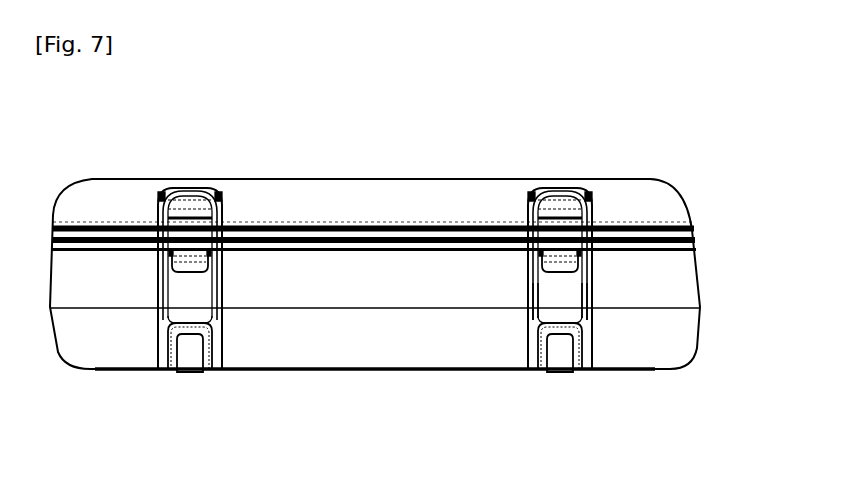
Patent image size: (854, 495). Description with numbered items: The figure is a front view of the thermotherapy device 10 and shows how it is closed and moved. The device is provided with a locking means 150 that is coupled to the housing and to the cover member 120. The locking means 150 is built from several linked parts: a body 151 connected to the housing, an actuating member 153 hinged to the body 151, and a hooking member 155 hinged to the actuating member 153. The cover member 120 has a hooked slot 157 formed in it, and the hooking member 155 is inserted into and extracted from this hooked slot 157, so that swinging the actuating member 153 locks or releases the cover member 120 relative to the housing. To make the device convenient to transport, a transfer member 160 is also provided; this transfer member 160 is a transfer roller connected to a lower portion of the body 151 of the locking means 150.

The storage case 10 is at (713, 332).
The cover member 120 is at (695, 192).
The locking means 150 is at (603, 290).
The body 151 is at (532, 293).
The actuating member 153 is at (582, 293).
The hooking member 155 is at (572, 195).
The hooked slot 157 is at (550, 220).
The transfer member 160 is at (565, 378).